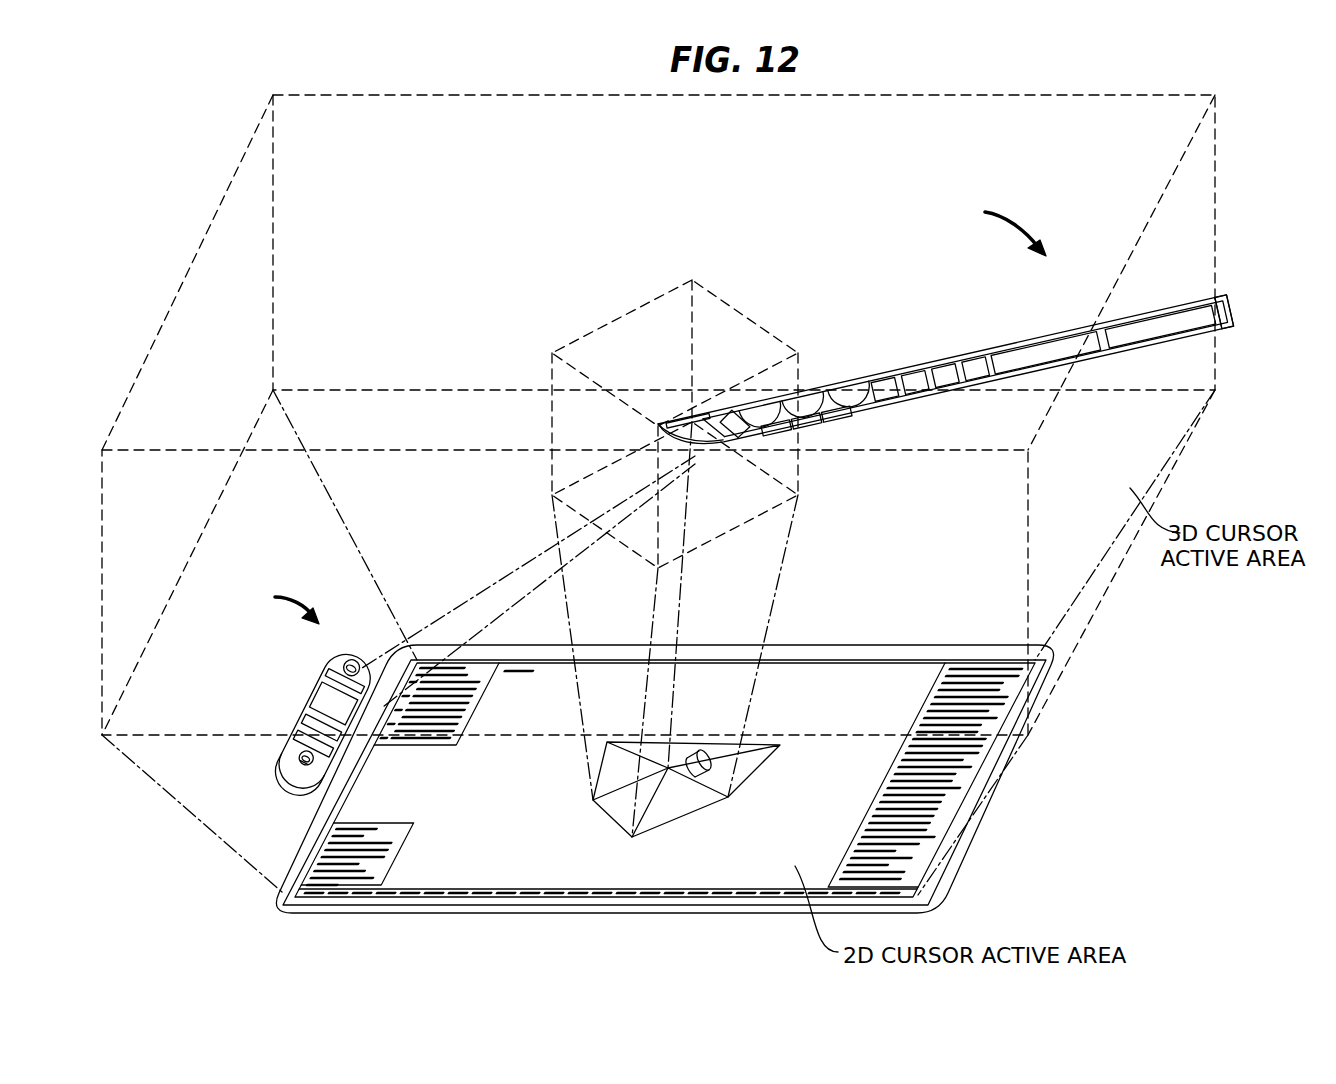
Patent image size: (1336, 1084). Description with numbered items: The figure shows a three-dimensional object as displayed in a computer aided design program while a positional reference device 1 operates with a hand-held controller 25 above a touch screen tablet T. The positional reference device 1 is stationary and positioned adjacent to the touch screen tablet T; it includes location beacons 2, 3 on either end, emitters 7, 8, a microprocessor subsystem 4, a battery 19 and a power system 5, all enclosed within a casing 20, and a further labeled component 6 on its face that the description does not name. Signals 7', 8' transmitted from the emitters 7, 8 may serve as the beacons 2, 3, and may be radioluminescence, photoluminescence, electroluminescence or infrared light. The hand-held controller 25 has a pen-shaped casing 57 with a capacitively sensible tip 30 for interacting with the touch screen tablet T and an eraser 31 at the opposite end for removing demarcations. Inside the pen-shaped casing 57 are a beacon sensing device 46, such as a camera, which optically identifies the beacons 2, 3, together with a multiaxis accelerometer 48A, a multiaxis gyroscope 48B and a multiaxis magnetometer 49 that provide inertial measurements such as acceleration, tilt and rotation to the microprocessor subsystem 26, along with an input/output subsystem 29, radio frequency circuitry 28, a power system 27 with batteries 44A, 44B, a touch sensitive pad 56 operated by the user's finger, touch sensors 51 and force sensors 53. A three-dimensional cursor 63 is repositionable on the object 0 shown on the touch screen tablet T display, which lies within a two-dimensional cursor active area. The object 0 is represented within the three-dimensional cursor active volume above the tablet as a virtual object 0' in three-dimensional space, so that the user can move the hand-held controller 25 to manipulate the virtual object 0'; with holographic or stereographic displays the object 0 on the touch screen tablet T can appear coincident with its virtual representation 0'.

The positional reference device 1 is at (286, 601).
The location beacon 2 is at (303, 756).
The location beacon 3 is at (352, 664).
The microprocessor subsystem 4 is at (304, 742).
The power system 5 is at (316, 727).
The key 6 is at (338, 680).
The emitter 7 is at (290, 792).
The emitter 8 is at (325, 716).
The battery 19 is at (328, 703).
The casing 20 is at (286, 779).
The hand-held controller 25 is at (1001, 225).
The microprocessor subsystem 26 is at (943, 373).
The power system 27 is at (974, 366).
The radio frequency circuitry 28 is at (913, 380).
The input/output subsystem 29 is at (882, 384).
The capacitively sensible tip 30 is at (657, 425).
The eraser 31 is at (1231, 314).
The battery 44A is at (1041, 356).
The battery 44B is at (1162, 328).
The beacon sensing device 46 is at (738, 438).
The multiaxis accelerometer 48A is at (804, 424).
The multiaxis gyroscope 48B is at (834, 416).
The multiaxis magnetometer 49 is at (776, 432).
The touch sensor 51 is at (757, 404).
The force sensor 53 is at (684, 420).
The touch sensitive pad 56 is at (846, 392).
The pen-shaped casing 57 is at (1126, 351).
The three-dimensional cursor 63 is at (692, 778).
The touch screen tablet T is at (966, 848).
The object 0 is at (686, 754).
The virtual object 0' is at (675, 410).
The beacon sensing signal 7' is at (539, 585).
The beacon sensing signal 8' is at (528, 562).